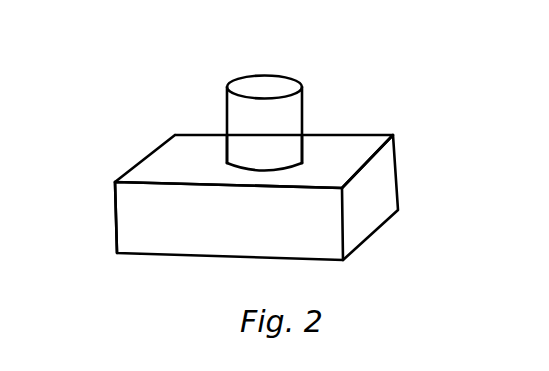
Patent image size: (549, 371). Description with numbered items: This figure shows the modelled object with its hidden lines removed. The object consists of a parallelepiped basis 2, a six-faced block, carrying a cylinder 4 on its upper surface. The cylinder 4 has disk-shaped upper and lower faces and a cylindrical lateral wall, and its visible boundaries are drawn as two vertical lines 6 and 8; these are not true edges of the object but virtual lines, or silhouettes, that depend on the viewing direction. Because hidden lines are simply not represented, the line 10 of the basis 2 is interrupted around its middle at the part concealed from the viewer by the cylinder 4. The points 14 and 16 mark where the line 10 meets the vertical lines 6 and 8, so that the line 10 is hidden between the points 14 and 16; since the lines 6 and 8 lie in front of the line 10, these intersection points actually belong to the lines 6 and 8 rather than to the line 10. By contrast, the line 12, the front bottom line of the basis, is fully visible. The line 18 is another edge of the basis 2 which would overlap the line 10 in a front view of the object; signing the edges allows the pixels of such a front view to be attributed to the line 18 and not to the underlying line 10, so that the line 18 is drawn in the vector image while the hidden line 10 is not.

The parallelepiped basis 2 is at (244, 203).
The cylinder 4 is at (245, 92).
The vertical line 6 is at (228, 114).
The vertical line 8 is at (302, 112).
The line of basis 10 is at (368, 135).
The front bottom line 12 is at (177, 258).
The intersection point 14 is at (224, 135).
The intersection point 16 is at (303, 134).
The line 18 is at (122, 178).